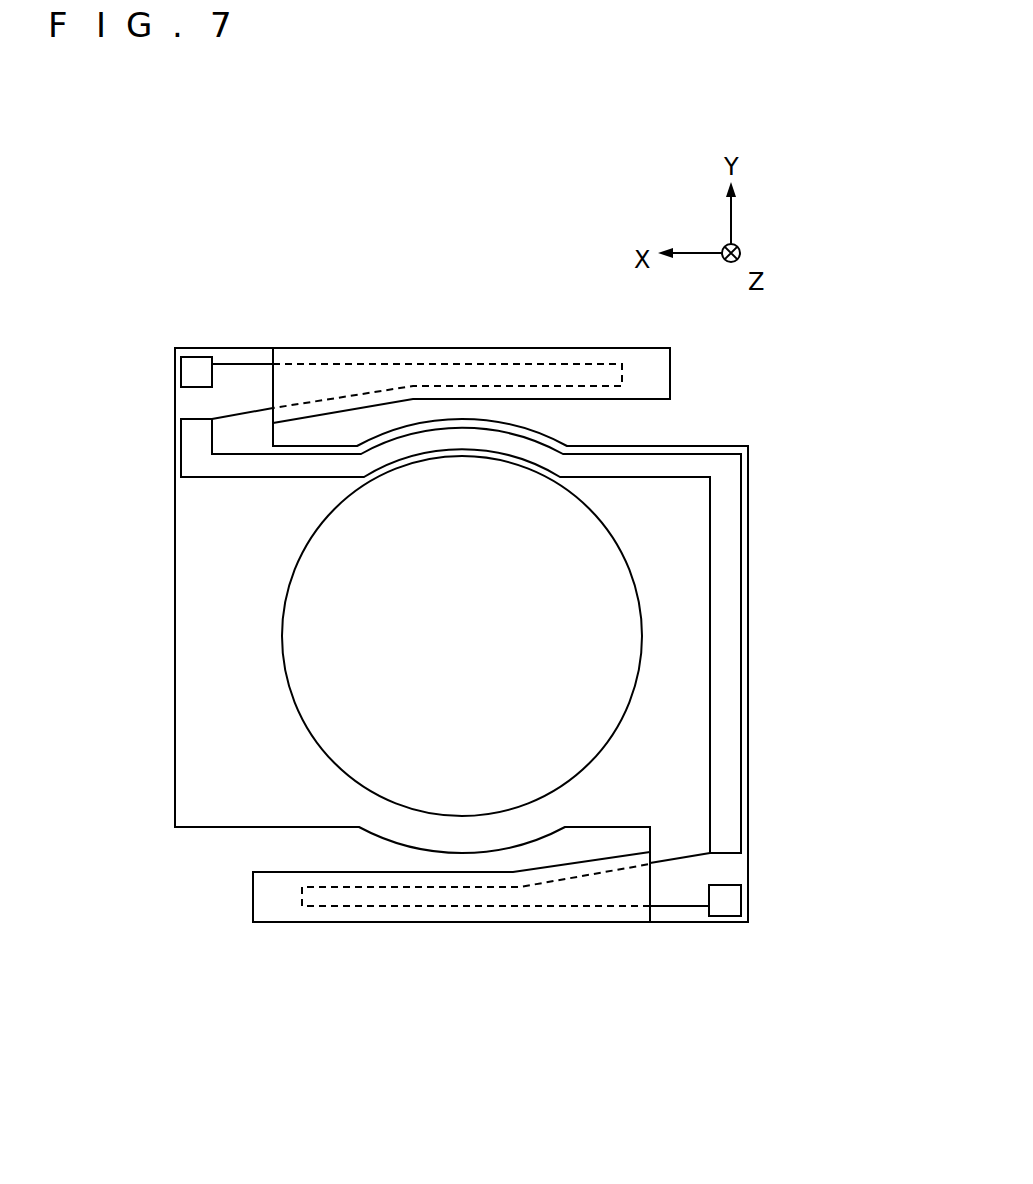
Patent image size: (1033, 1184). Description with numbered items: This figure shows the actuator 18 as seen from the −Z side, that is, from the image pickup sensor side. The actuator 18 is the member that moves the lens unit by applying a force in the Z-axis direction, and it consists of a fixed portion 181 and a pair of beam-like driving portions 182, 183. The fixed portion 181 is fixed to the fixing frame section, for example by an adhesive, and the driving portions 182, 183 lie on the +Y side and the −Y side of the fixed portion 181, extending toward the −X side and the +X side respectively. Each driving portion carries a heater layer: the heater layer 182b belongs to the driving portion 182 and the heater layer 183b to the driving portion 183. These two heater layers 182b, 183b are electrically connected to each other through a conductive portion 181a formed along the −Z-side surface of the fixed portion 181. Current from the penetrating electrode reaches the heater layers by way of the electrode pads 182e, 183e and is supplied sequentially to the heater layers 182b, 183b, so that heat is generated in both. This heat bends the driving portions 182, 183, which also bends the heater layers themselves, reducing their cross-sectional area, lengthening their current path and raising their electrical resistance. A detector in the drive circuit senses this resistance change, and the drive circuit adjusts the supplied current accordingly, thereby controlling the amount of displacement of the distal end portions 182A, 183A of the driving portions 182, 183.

The actuator 18 is at (276, 181).
The fixed portion 181 is at (200, 693).
The conductive portion 181a is at (743, 558).
The driving portion 182 is at (379, 320).
The distal end portion 182A is at (662, 378).
The heater layer 182b is at (502, 363).
The electrode pad 182e is at (200, 355).
The driving portion 183 is at (433, 947).
The distal end portion 183A is at (245, 893).
The heater layer 183b is at (560, 907).
The electrode pad 183e is at (725, 918).